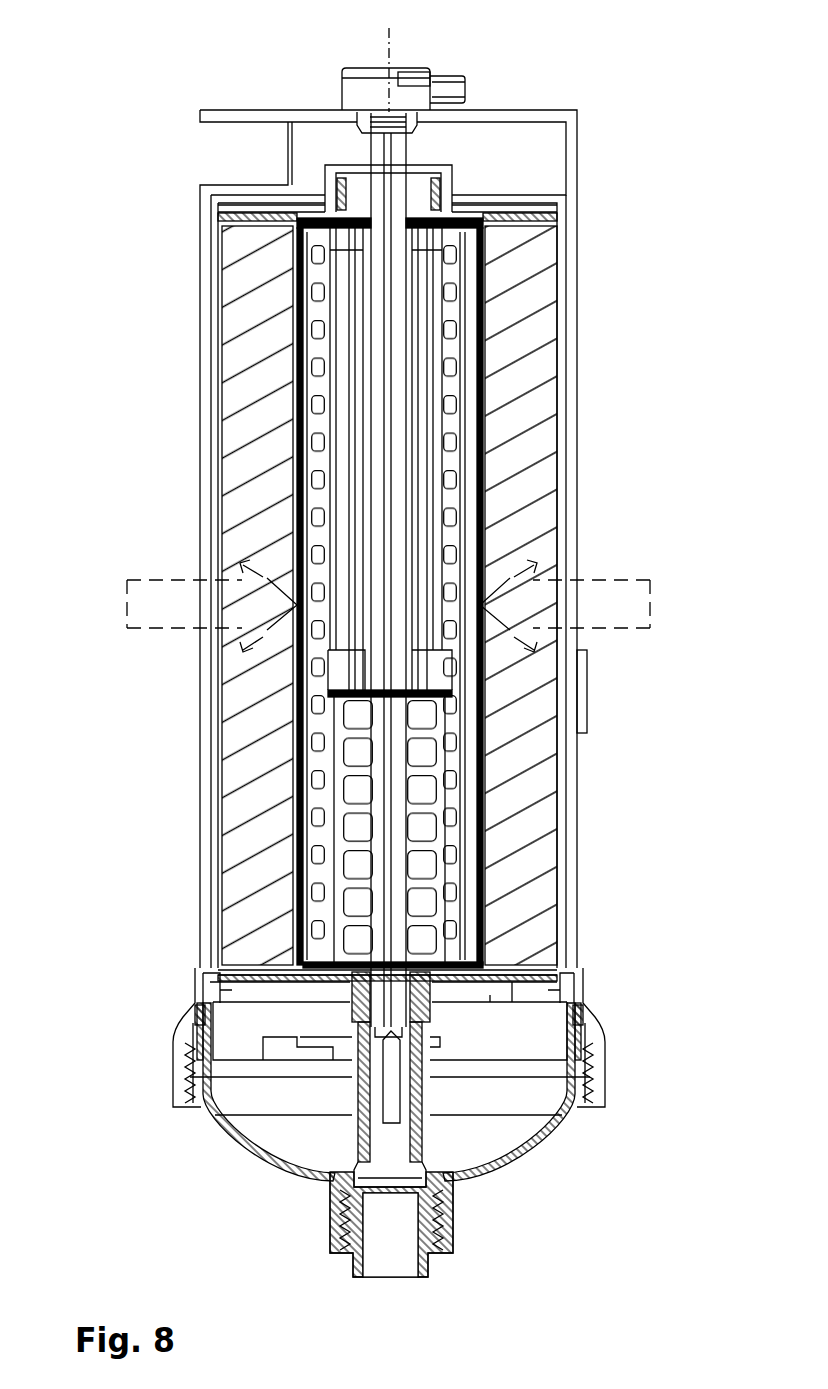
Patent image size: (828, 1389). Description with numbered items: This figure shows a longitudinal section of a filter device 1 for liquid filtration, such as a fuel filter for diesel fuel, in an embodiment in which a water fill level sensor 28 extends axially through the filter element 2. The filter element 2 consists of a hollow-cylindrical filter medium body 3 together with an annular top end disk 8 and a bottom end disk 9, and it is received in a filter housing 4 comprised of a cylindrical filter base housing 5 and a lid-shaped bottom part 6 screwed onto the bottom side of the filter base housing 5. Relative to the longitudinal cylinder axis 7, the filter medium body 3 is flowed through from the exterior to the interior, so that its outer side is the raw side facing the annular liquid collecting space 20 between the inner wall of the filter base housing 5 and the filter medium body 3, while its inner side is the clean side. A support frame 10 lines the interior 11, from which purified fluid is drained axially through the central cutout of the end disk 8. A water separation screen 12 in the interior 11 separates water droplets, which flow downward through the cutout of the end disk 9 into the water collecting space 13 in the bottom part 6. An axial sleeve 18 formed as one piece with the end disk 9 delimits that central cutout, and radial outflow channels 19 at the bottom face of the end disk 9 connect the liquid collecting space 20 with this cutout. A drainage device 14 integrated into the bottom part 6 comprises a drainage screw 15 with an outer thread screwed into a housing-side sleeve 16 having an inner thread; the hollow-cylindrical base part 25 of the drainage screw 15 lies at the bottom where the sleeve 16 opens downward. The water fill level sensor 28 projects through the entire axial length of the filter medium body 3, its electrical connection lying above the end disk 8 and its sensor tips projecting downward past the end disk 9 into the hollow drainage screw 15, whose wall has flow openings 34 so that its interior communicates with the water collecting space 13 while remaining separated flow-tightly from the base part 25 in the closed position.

The filter device 1 is at (130, 146).
The filter element 2 is at (236, 298).
The filter medium body 3 is at (238, 352).
The filter housing 4 is at (578, 323).
The filter base housing 5 is at (578, 404).
The bottom part 6 is at (533, 1150).
The longitudinal cylinder axis 7 is at (388, 4).
The annular end disk 8 is at (528, 213).
The bottom end disk 9 is at (535, 982).
The support frame 10 is at (437, 764).
The interior 11 is at (434, 788).
The water separation screen 12 is at (455, 466).
The water collecting space 13 is at (488, 1152).
The drainage device 14 is at (350, 1257).
The drainage screw 15 is at (422, 1097).
The sleeve 16 is at (447, 1216).
The axial sleeve 18 is at (433, 1005).
The outflow channel 19 is at (240, 993).
The liquid collecting space 20 is at (198, 914).
The base part 25 is at (428, 1265).
The water fill level sensor 28 is at (397, 864).
The flow openings 34 is at (376, 1092).